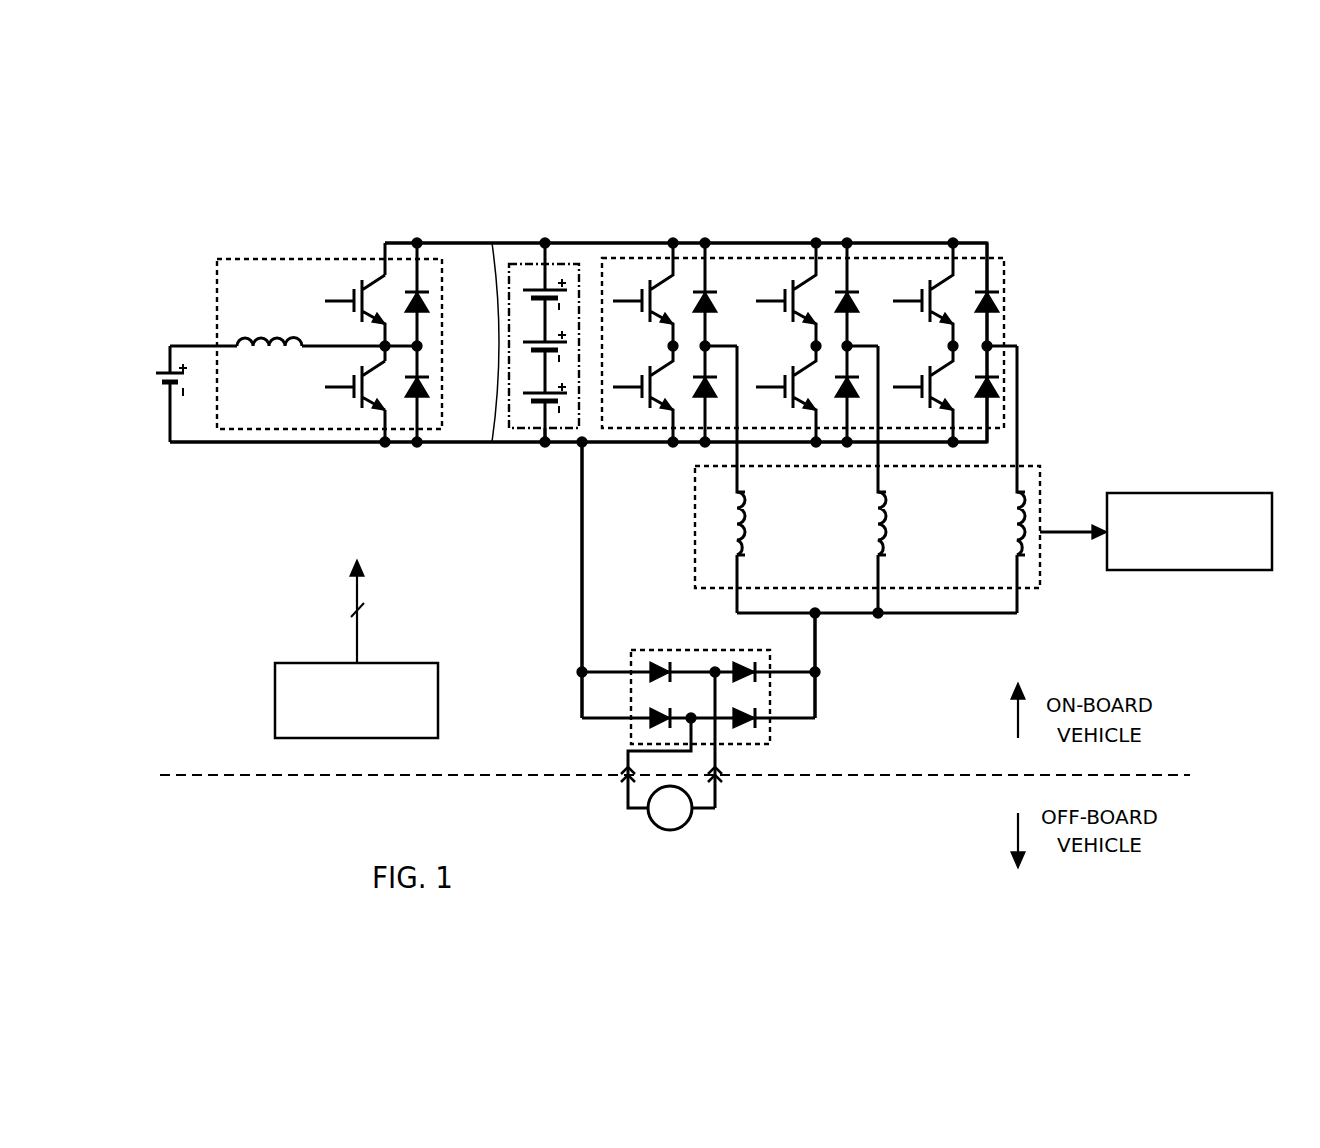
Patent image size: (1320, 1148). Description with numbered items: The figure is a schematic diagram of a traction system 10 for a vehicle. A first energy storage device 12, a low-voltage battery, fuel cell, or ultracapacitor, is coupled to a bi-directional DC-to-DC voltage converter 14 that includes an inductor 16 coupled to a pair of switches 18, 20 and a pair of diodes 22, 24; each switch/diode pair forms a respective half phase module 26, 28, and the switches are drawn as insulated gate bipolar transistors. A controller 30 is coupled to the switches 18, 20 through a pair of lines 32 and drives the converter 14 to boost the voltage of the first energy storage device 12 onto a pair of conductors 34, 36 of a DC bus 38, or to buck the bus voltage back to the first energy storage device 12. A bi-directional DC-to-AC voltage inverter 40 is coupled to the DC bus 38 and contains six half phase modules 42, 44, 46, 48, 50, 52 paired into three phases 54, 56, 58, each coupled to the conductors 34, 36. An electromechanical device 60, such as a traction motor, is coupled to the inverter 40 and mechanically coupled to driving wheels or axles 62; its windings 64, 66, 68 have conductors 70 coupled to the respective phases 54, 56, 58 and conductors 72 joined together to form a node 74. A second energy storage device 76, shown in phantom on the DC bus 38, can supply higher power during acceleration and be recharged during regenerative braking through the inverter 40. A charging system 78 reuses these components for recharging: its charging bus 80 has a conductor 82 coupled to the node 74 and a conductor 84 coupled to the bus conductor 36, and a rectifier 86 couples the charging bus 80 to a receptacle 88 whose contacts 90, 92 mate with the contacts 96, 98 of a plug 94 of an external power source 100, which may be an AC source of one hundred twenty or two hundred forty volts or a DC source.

The traction system 10 is at (731, 160).
The first energy storage device 12 is at (168, 365).
The bi-directional DC-to-DC voltage converter 14 is at (346, 331).
The inductor 16 is at (245, 340).
The switch 18 is at (338, 299).
The switch 20 is at (338, 386).
The diode 22 is at (428, 303).
The diode 24 is at (428, 392).
The half phase module 26 is at (374, 266).
The half phase module 28 is at (318, 386).
The controller 30 is at (275, 710).
The lines 32 is at (357, 630).
The conductor 34 is at (467, 243).
The conductor 36 is at (462, 444).
The DC bus 38 is at (529, 362).
The bi-directional DC-to-AC voltage inverter 40 is at (799, 313).
The half phase module 42 is at (655, 254).
The half phase module 44 is at (650, 355).
The half phase module 46 is at (798, 254).
The half phase module 48 is at (795, 355).
The half phase module 50 is at (937, 254).
The half phase module 52 is at (933, 355).
The phase 54 is at (673, 313).
The phase 56 is at (816, 315).
The phase 58 is at (954, 315).
The electromechanical device 60 is at (843, 479).
The driving wheels or axles 62 is at (1105, 508).
The winding 64 is at (745, 530).
The winding 66 is at (887, 530).
The winding 68 is at (1012, 510).
The conductors 70 is at (740, 482).
The conductors 72 is at (740, 582).
The node 74 is at (920, 614).
The second energy storage device 76 is at (535, 430).
The charging system 78 is at (783, 797).
The charging bus 80 is at (694, 625).
The conductor 82 is at (815, 645).
The conductor 84 is at (582, 645).
The rectifier 86 is at (631, 688).
The receptacle 88 is at (640, 748).
The contact 90 is at (626, 767).
The contact 92 is at (718, 766).
The plug 94 is at (644, 805).
The contact 96 is at (626, 781).
The contact 98 is at (718, 783).
The external power source 100 is at (668, 831).